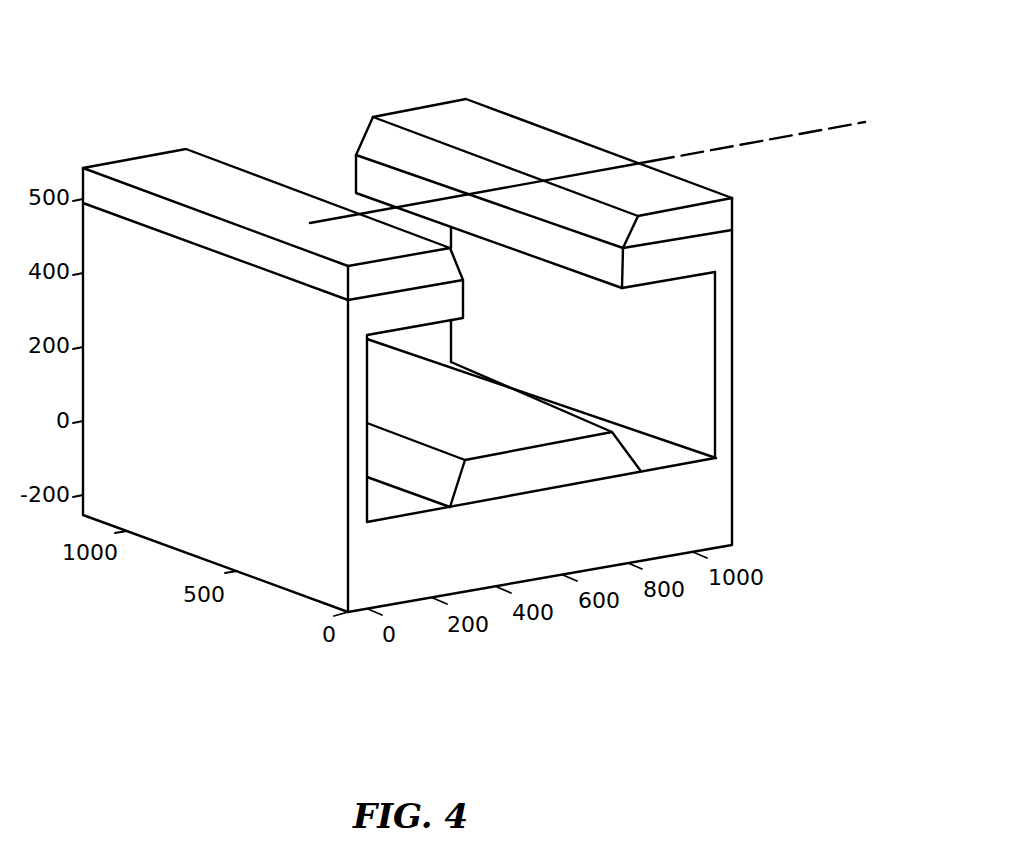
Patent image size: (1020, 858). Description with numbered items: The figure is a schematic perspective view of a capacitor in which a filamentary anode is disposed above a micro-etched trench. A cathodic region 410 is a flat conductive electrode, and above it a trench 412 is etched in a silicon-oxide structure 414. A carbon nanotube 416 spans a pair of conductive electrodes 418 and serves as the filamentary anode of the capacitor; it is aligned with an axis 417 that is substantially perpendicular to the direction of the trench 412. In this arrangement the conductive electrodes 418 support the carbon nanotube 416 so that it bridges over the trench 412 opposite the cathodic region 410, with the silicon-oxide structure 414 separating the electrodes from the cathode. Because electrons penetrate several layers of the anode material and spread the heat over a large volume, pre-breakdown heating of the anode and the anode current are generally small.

The cathodic region 410 is at (528, 437).
The trench 412 is at (679, 332).
The silicon-oxide structure 414 is at (727, 297).
The carbon nanotube 416 is at (595, 170).
The axis 417 is at (728, 145).
The conductive electrodes 418 is at (165, 173).